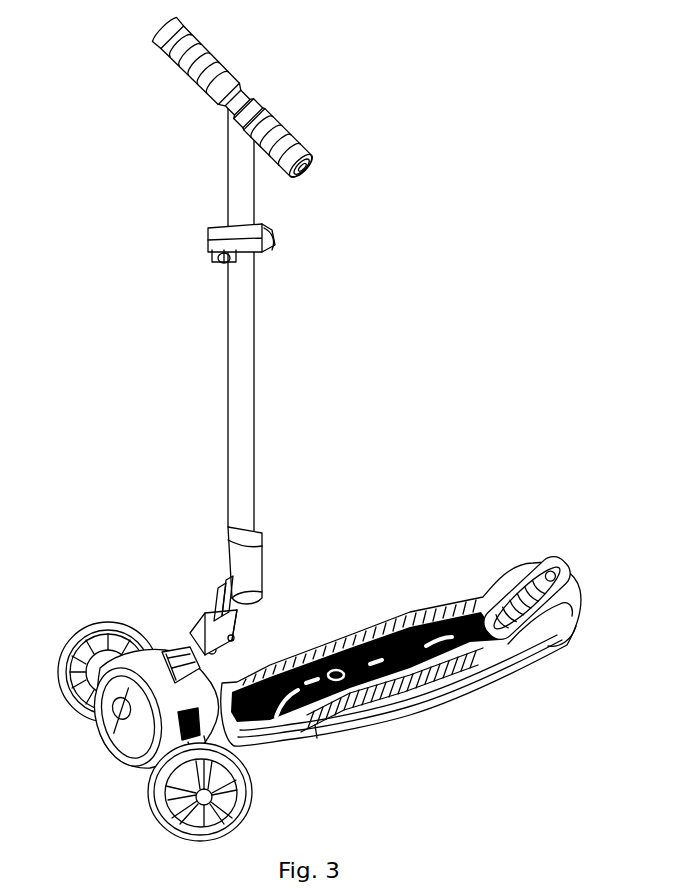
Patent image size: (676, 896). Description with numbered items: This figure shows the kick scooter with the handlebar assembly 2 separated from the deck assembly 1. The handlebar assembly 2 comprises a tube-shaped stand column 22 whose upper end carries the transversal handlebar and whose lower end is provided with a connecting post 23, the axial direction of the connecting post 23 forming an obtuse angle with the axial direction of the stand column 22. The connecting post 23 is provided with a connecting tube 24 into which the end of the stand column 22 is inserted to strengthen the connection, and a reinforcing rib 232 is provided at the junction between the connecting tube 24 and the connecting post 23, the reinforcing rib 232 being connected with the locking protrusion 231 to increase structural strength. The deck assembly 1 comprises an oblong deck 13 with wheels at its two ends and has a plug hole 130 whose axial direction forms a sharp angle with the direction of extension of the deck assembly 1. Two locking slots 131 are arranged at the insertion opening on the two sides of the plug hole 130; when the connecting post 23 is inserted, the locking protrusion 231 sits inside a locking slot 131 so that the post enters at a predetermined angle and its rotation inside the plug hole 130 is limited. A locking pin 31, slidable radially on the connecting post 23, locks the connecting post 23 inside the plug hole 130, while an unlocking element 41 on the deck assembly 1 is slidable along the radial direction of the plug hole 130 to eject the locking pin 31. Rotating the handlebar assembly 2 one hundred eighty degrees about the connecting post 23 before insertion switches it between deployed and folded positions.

The deck assembly 1 is at (388, 583).
The handlebar assembly 2 is at (275, 386).
The stand column 22 is at (233, 423).
The connecting post 23 is at (208, 606).
The locking protrusion 231 is at (218, 600).
The reinforcing rib 232 is at (223, 598).
The connecting tube 24 is at (263, 570).
The locking pin 31 is at (234, 636).
The deck 13 is at (362, 713).
The plug hole 130 is at (183, 652).
The locking slot 131 is at (133, 624).
The unlocking element 41 is at (250, 775).